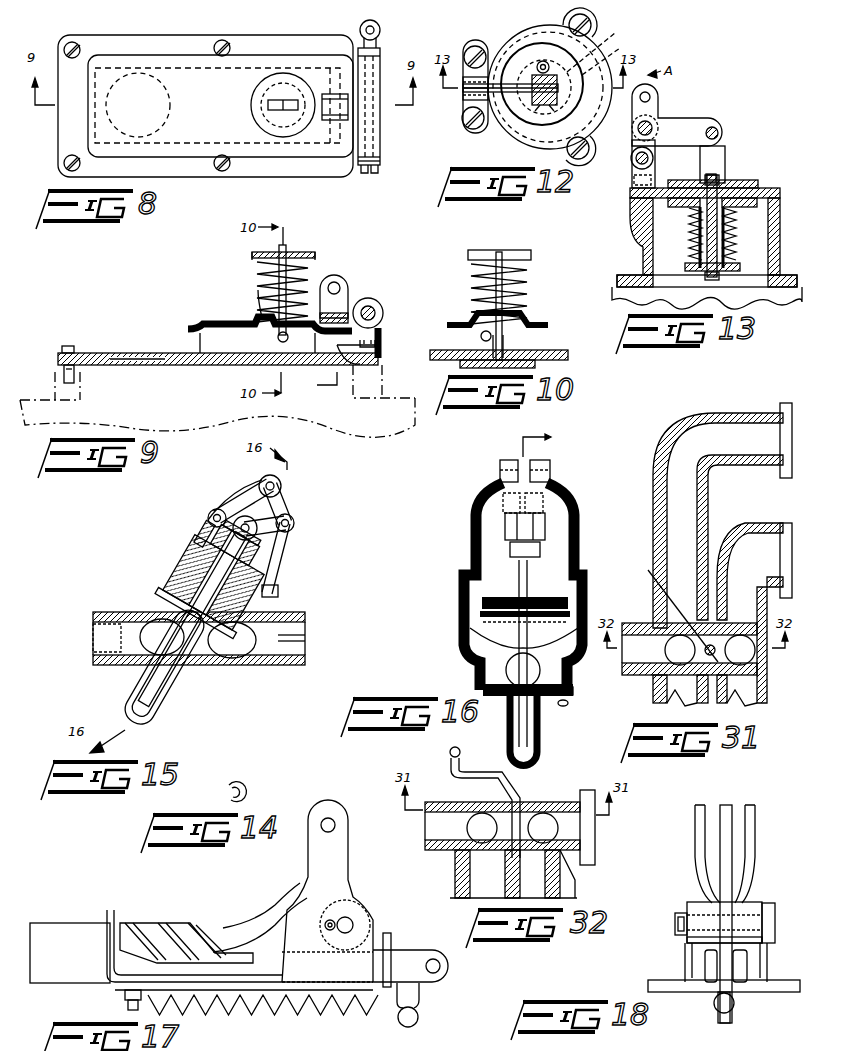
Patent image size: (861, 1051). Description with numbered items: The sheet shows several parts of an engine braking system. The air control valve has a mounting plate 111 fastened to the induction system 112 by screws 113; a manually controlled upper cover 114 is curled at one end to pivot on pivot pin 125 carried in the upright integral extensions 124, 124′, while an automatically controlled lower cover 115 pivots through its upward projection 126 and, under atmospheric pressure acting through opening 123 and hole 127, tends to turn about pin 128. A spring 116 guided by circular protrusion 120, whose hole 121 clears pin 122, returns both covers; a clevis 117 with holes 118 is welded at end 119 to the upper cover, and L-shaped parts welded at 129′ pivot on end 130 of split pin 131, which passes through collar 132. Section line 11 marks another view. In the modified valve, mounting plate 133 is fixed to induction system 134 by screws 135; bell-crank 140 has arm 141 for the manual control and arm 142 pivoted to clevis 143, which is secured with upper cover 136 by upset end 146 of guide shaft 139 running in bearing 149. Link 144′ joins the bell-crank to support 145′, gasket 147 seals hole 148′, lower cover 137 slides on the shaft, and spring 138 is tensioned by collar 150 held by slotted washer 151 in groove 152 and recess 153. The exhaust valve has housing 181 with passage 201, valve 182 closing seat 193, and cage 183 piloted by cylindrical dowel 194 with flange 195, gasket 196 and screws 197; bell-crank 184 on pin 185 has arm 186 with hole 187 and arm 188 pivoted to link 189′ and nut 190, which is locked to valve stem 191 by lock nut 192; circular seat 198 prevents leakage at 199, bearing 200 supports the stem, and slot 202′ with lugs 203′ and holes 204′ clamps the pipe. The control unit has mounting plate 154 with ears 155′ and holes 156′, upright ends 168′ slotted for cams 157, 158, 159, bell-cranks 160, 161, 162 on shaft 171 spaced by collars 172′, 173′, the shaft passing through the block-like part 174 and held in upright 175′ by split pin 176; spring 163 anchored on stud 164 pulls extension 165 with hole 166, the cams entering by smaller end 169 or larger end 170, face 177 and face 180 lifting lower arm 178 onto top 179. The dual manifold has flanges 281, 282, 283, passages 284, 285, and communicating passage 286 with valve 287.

In FIG. 8, the opening 123 is at (170, 105).
In FIG. 9, the opening 123 is at (140, 357).
In FIG. 8, the integral extension 124 is at (380, 33).
In FIG. 8, the integral extension 124′ is at (381, 160).
In FIG. 8, the pivot pin 125 is at (379, 172).
In FIG. 9, the pivot pin 125 is at (381, 305).
In FIG. 9, the mounting plate 111 is at (58, 358).
In FIG. 9, the induction system 112 is at (64, 378).
In FIG. 9, the screws 113 is at (62, 349).
In FIG. 9, the upper cover 114 is at (95, 353).
In FIG. 9, the lower cover 115 is at (85, 365).
In FIG. 9, the spring 116 is at (256, 272).
In FIG. 9, the clevis 117 is at (348, 292).
In FIG. 9, the holes 118 is at (340, 276).
In FIG. 9, the clevis end 119 is at (348, 305).
In FIG. 9, the circular protrusion 120 is at (258, 325).
In FIG. 9, the hole 121 is at (256, 300).
In FIG. 9, the pin 122 is at (252, 254).
In FIG. 9, the upward projection 126 is at (360, 364).
In FIG. 9, the hole 127 is at (248, 340).
In FIG. 10, the hole 127 is at (510, 340).
In FIG. 10, the pin 128 is at (481, 336).
In FIG. 9, the weld 129′ is at (376, 344).
In FIG. 10, the weld 129′ is at (480, 348).
In FIG. 10, the split pin end 130 is at (520, 320).
In FIG. 9, the split pin 131 is at (287, 248).
In FIG. 10, the split pin 131 is at (502, 280).
In FIG. 9, the collar 132 is at (312, 256).
In FIG. 10, the collar 132 is at (530, 258).
In FIG. 9, the section line 11 is at (318, 366).
In FIG. 12, the link 144′ is at (469, 44).
In FIG. 13, the link 144′ is at (636, 138).
In FIG. 12, the support 145′ is at (480, 44).
In FIG. 13, the support 145′ is at (631, 160).
In FIG. 12, the hole 148′ is at (606, 47).
In FIG. 13, the arm 141 is at (658, 92).
In FIG. 13, the bell-crank 140 is at (658, 112).
In FIG. 13, the arm 142 is at (716, 122).
In FIG. 13, the clevis 143 is at (698, 156).
In FIG. 13, the upset end 146 is at (706, 176).
In FIG. 13, the screws 135 is at (632, 180).
In FIG. 13, the upper cover 136 is at (750, 178).
In FIG. 13, the gasket 147 is at (768, 188).
In FIG. 13, the mounting plate 133 is at (780, 193).
In FIG. 13, the induction system 134 is at (780, 222).
In FIG. 13, the lower cover 137 is at (728, 224).
In FIG. 13, the spring 138 is at (735, 240).
In FIG. 13, the guide shaft 139 is at (719, 276).
In FIG. 13, the bearing 149 is at (690, 222).
In FIG. 13, the collar 150 is at (735, 258).
In FIG. 13, the slotted washer 151 is at (708, 277).
In FIG. 13, the groove 152 is at (738, 293).
In FIG. 13, the recess 153 is at (685, 268).
In FIG. 15, the housing 181 is at (225, 665).
In FIG. 15, the valve 182 is at (190, 668).
In FIG. 15, the cage 183 is at (280, 575).
In FIG. 15, the bell-crank 184 is at (281, 484).
In FIG. 15, the pin 185 is at (282, 487).
In FIG. 15, the arm 186 is at (226, 500).
In FIG. 15, the hole 187 is at (212, 512).
In FIG. 15, the arm 188 is at (294, 521).
In FIG. 15, the nut 190 is at (258, 531).
In FIG. 15, the valve stem 191 is at (262, 562).
In FIG. 15, the lock nut 192 is at (262, 547).
In FIG. 15, the seat 193 is at (250, 656).
In FIG. 15, the cylindrical dowel 194 is at (160, 552).
In FIG. 15, the flange 195 is at (185, 530).
In FIG. 15, the gasket 196 is at (176, 545).
In FIG. 15, the screws 197 is at (178, 522).
In FIG. 15, the circular seat 198 is at (282, 592).
In FIG. 15, the stem location 199 is at (212, 580).
In FIG. 15, the bearing 200 is at (157, 715).
In FIG. 15, the passage 201 is at (128, 612).
In FIG. 15, the slot 202′ is at (93, 636).
In FIG. 16, the slot 202′ is at (573, 691).
In FIG. 15, the lugs 203′ is at (98, 622).
In FIG. 15, the holes 204′ is at (108, 622).
In FIG. 16, the link 189′ is at (503, 500).
In FIG. 31, the flange 281 is at (790, 405).
In FIG. 31, the flange 282 is at (793, 528).
In FIG. 32, the flange 283 is at (455, 865).
In FIG. 31, the passage 284 is at (733, 575).
In FIG. 32, the passage 284 is at (548, 878).
In FIG. 31, the passage 285 is at (700, 515).
In FIG. 32, the passage 285 is at (465, 882).
In FIG. 31, the communicating passage 286 is at (640, 648).
In FIG. 32, the communicating passage 286 is at (435, 820).
In FIG. 31, the valve 287 is at (684, 606).
In FIG. 32, the valve 287 is at (470, 778).
In FIG. 17, the larger end 170 is at (30, 965).
In FIG. 17, the upright end 168′ is at (387, 935).
In FIG. 17, the stud 164 is at (125, 1002).
In FIG. 17, the top 179 is at (168, 923).
In FIG. 17, the face 180 is at (205, 925).
In FIG. 17, the face 177 is at (243, 925).
In FIG. 17, the lower arm 178 is at (308, 870).
In FIG. 17, the split pin 176 is at (352, 920).
In FIG. 17, the shaft 171 is at (348, 920).
In FIG. 17, the smaller end 169 is at (438, 952).
In FIG. 17, the hole 166 is at (420, 993).
In FIG. 17, the extension 165 is at (418, 1017).
In FIG. 17, the spring 163 is at (290, 1012).
In FIG. 17, the mounting plate 154 is at (345, 995).
In FIG. 18, the bell-crank 162 is at (700, 805).
In FIG. 18, the bell-crank 161 is at (726, 805).
In FIG. 18, the bell-crank 160 is at (750, 805).
In FIG. 18, the block 174 is at (762, 915).
In FIG. 18, the upright 175′ is at (775, 903).
In FIG. 18, the collar 173′ is at (706, 885).
In FIG. 18, the collar 172′ is at (700, 900).
In FIG. 18, the hole 156′ is at (685, 960).
In FIG. 18, the ear 155′ is at (665, 980).
In FIG. 18, the cam 158 is at (723, 1023).
In FIG. 18, the cam 159 is at (714, 1003).
In FIG. 18, the cam 157 is at (734, 1003).